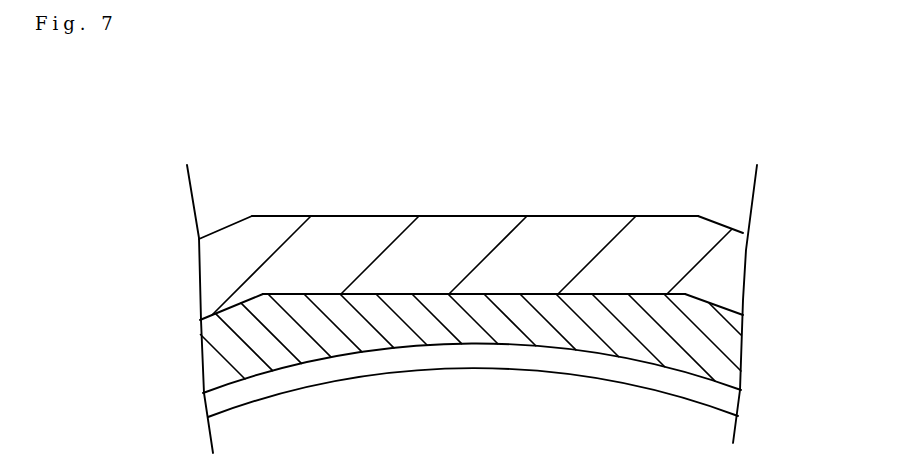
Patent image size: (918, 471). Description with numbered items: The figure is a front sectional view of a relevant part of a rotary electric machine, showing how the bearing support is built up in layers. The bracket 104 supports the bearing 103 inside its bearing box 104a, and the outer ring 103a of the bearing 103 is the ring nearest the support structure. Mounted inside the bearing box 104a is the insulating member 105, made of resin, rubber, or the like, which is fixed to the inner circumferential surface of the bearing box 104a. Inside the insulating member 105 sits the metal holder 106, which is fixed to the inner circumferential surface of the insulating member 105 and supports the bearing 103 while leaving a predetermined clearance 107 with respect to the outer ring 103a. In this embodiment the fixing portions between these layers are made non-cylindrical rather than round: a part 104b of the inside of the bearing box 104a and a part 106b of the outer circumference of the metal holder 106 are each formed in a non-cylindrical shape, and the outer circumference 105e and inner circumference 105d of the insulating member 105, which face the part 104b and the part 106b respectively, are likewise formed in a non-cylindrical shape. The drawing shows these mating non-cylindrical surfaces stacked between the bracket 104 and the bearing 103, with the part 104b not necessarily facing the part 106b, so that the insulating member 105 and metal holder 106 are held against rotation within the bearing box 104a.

The bearing 103 is at (211, 437).
The outer ring 103a is at (727, 427).
The bracket 104 is at (190, 189).
The bearing box 104a is at (698, 197).
The part of the inside of the bearing box 104b is at (563, 215).
The insulating member 105 is at (683, 257).
The inner circumference of the insulating member 105d is at (413, 296).
The outer circumference of the insulating member 105e is at (443, 215).
The metal holder 106 is at (685, 338).
The part of the outer circumference of the metal holder 106b is at (323, 295).
The clearance 107 is at (735, 400).